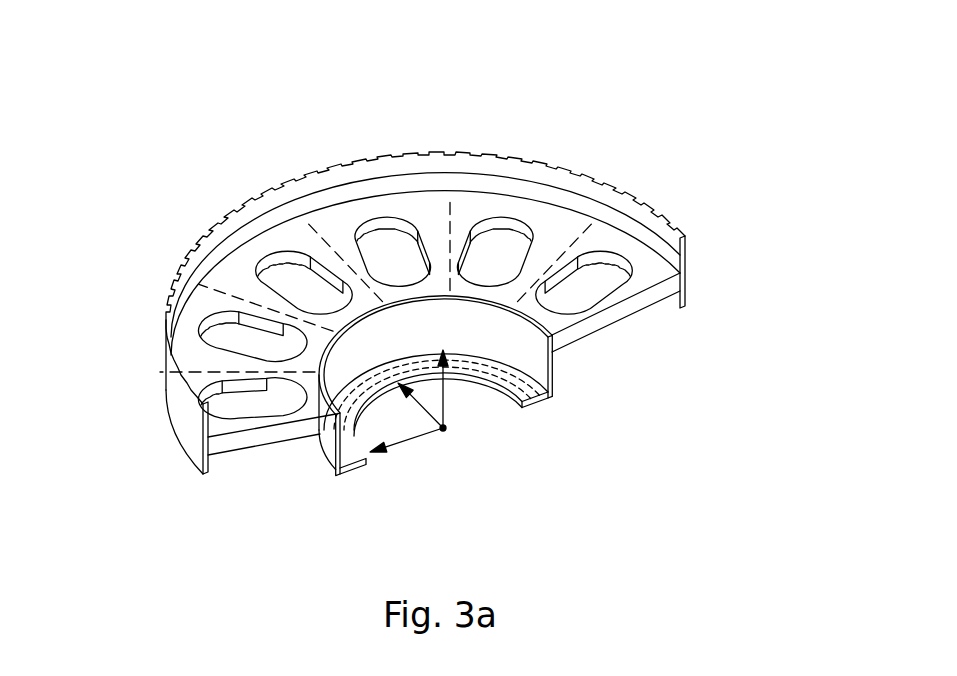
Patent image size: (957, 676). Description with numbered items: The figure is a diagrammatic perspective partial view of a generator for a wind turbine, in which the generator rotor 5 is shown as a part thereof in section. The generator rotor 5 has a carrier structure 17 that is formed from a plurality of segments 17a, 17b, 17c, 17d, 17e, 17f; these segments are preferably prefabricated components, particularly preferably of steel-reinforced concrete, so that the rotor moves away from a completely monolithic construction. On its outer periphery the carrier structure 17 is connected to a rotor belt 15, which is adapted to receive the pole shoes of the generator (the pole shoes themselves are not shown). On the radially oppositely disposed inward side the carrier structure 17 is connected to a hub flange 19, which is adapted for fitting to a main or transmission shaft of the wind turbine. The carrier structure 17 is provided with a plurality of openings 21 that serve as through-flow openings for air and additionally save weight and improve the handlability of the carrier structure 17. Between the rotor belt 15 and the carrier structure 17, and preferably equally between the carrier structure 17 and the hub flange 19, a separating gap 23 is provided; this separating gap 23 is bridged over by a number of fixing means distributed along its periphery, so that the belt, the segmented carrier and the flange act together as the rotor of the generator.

The generator rotor 5 is at (138, 74).
The rotor belt 15 is at (689, 255).
The carrier structure 17 is at (247, 496).
The segment 17a is at (640, 281).
The segment 17b is at (543, 220).
The segment 17c is at (422, 208).
The segment 17d is at (282, 232).
The segment 17e is at (197, 302).
The segment 17f is at (197, 392).
The hub flange 19 is at (553, 393).
The opening 21 is at (596, 272).
The separating gap 23 is at (474, 207).